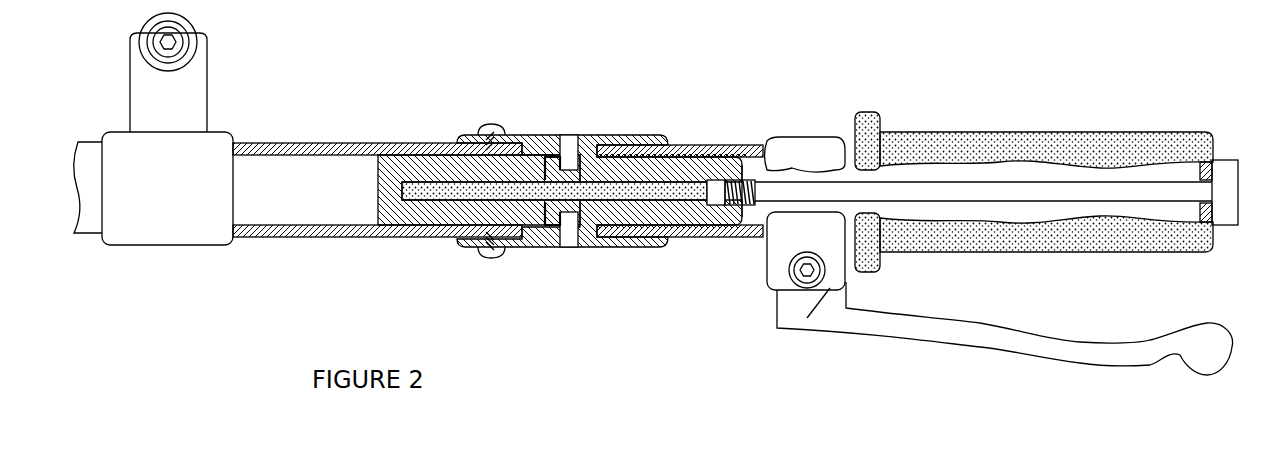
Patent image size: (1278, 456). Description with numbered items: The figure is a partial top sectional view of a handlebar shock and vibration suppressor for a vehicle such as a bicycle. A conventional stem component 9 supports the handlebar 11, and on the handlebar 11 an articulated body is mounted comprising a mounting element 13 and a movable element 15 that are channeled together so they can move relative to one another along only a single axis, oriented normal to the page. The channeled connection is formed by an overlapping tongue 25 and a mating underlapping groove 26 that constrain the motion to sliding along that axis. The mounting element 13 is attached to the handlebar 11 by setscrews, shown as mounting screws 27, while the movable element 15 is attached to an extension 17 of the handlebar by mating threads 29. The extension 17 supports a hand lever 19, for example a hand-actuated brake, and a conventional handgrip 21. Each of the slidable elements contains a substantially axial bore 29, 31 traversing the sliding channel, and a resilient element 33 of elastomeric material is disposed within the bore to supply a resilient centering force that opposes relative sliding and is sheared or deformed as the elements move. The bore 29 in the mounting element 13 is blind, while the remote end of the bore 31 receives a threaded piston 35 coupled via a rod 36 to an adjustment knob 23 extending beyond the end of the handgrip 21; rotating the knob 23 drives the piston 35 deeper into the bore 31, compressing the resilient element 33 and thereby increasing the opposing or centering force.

The stem component 9 is at (222, 135).
The handlebar 11 is at (88, 142).
The mounting element 13 is at (522, 248).
The movable element 15 is at (624, 135).
The extension 17 is at (760, 146).
The hand lever 19 is at (777, 306).
The handgrip 21 is at (1013, 133).
The adjustment knob 23 is at (1224, 160).
The overlapping tongue 25 is at (546, 157).
The underlapping groove 26 is at (566, 158).
The mounting screws 27 is at (491, 124).
The mating threads / axial bore 29 is at (478, 176).
The axial bore 31 is at (602, 247).
The resilient element 33 is at (680, 206).
The threaded piston 35 is at (762, 144).
The rod 36 is at (897, 190).